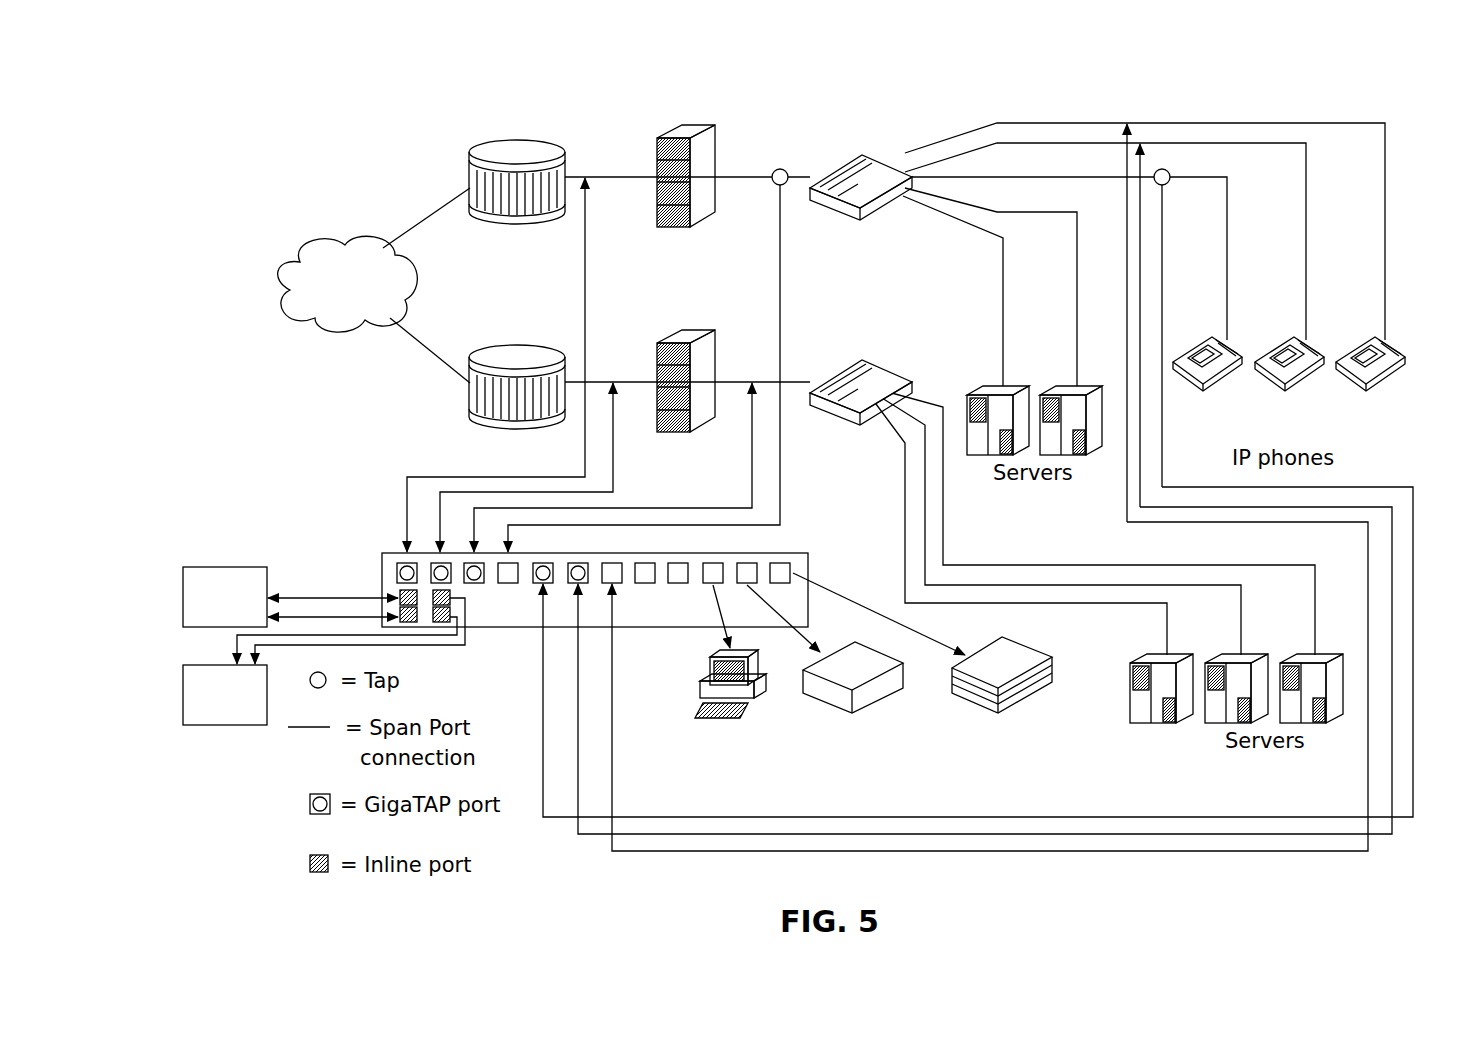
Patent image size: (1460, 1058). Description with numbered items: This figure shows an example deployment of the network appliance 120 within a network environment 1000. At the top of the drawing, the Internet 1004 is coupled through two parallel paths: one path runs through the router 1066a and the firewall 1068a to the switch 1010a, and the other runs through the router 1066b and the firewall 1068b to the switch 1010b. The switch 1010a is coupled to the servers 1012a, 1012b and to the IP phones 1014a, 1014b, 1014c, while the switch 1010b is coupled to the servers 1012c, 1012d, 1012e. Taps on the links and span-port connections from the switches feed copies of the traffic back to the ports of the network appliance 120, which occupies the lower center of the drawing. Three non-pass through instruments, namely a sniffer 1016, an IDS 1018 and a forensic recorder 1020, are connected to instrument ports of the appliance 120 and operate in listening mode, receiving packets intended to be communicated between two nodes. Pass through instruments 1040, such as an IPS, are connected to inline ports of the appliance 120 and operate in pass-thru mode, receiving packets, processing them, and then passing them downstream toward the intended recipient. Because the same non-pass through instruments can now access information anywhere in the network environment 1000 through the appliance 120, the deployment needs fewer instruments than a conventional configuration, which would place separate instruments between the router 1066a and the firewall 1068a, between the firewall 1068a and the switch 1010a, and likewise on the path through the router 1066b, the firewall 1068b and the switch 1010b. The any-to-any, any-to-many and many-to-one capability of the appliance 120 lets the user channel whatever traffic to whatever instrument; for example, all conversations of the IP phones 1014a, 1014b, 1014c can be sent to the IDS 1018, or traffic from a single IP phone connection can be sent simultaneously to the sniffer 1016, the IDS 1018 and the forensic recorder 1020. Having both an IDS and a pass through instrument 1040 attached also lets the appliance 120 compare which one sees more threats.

The network environment 1000 is at (1245, 50).
The Internet 1004 is at (348, 236).
The router 1066a is at (516, 138).
The router 1066b is at (516, 340).
The firewall 1068a is at (672, 133).
The firewall 1068b is at (672, 330).
The switch 1010a is at (850, 160).
The switch 1010b is at (852, 362).
The server 1012a is at (978, 457).
The server 1012b is at (1098, 457).
The server 1012c is at (1142, 726).
The server 1012d is at (1220, 726).
The server 1012e is at (1330, 726).
The IP phone 1014a is at (1203, 386).
The IP phone 1014b is at (1310, 398).
The IP phone 1014c is at (1388, 378).
The sniffer 1016 is at (710, 667).
The IDS 1018 is at (823, 705).
The forensic recorder 1020 is at (955, 700).
The pass through instrument 1040 is at (183, 593).
The network appliance 120 is at (383, 588).